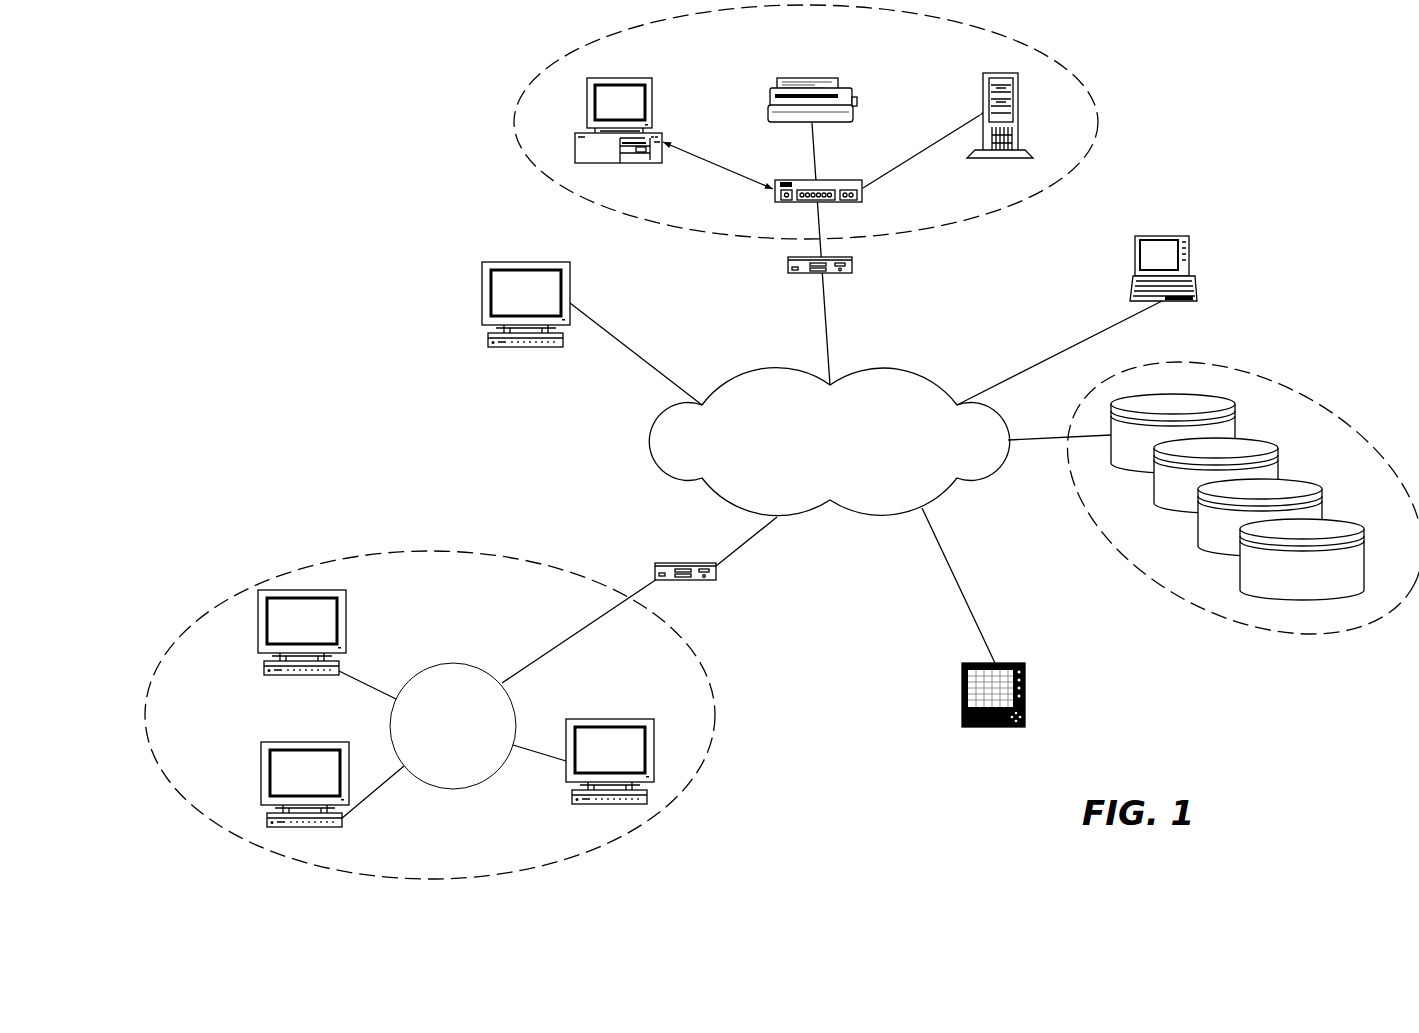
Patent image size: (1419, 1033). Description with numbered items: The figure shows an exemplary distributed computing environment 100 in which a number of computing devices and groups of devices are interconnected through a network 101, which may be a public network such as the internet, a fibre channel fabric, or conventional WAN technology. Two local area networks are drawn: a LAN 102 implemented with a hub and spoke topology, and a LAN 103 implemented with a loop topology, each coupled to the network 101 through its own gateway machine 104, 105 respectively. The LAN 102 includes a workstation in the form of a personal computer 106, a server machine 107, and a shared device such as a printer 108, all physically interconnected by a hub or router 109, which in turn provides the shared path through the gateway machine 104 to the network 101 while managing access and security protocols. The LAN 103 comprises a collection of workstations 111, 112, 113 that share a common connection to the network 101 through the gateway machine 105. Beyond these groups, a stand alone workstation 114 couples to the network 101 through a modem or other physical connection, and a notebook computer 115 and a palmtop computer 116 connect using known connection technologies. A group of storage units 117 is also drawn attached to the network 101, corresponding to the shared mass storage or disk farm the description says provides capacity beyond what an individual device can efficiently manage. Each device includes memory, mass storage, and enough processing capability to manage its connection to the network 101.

The computing environment 100 is at (365, 105).
The network 101 is at (668, 425).
The LAN 102 is at (533, 92).
The LAN 103 is at (452, 551).
The gateway machine 104 is at (800, 280).
The gateway machine 105 is at (673, 563).
The personal computer 106 is at (653, 77).
The server machine 107 is at (990, 73).
The printer 108 is at (812, 77).
The hub or router 109 is at (837, 175).
The workstation 111 is at (347, 610).
The workstation 112 is at (292, 742).
The workstation 113 is at (611, 718).
The stand alone workstation 114 is at (503, 267).
The notebook computer 115 is at (1164, 236).
The palmtop computer 116 is at (968, 663).
The database storage 117 is at (1235, 376).